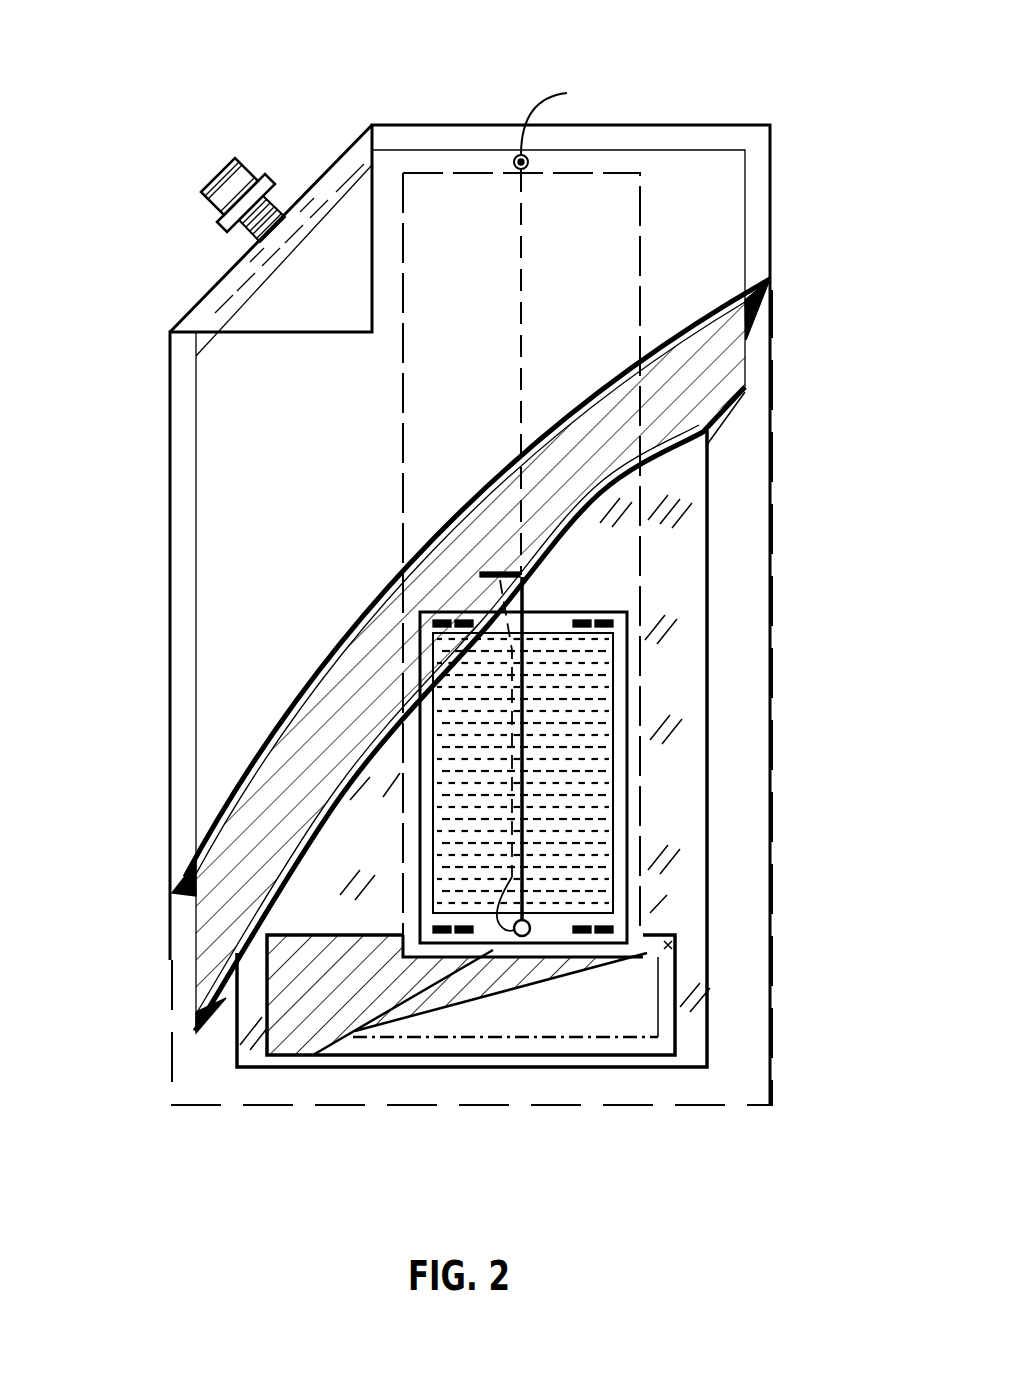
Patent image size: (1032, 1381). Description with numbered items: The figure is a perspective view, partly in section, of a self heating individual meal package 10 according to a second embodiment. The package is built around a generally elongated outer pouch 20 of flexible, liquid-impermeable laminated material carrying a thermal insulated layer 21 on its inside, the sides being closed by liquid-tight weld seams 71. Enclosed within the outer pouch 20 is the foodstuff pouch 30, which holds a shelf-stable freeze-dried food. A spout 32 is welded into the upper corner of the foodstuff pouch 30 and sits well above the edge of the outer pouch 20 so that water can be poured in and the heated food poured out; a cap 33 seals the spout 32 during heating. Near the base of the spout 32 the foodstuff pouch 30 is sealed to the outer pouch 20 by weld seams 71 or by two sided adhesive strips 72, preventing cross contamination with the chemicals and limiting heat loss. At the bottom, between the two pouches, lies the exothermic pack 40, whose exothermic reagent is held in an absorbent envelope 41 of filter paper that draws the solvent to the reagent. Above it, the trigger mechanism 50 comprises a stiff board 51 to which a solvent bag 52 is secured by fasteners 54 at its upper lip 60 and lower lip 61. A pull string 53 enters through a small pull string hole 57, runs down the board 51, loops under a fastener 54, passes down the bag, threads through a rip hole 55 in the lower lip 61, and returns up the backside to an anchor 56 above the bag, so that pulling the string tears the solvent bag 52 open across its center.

The self heating individual meal package 10 is at (172, 665).
The outer pouch 20 is at (757, 242).
The thermal insulated layer 21 is at (745, 360).
The foodstuff pouch 30 is at (680, 480).
The spout 32 is at (242, 238).
The cap 33 is at (213, 175).
The exothermic pack 40 is at (655, 1060).
The absorbent envelope 41 is at (675, 950).
The trigger mechanism 50 is at (395, 760).
The board 51 is at (615, 562).
The solvent bag 52 is at (585, 793).
The pull string 53 is at (522, 255).
The fasteners 54 is at (628, 630).
The rip hole 55 is at (526, 955).
The anchor 56 is at (537, 578).
The pull string hole 57 is at (545, 152).
The upper lip 60 is at (550, 623).
The lower lip 61 is at (497, 928).
The weld seams 71 is at (193, 525).
The two sided adhesive strips 72 is at (197, 366).